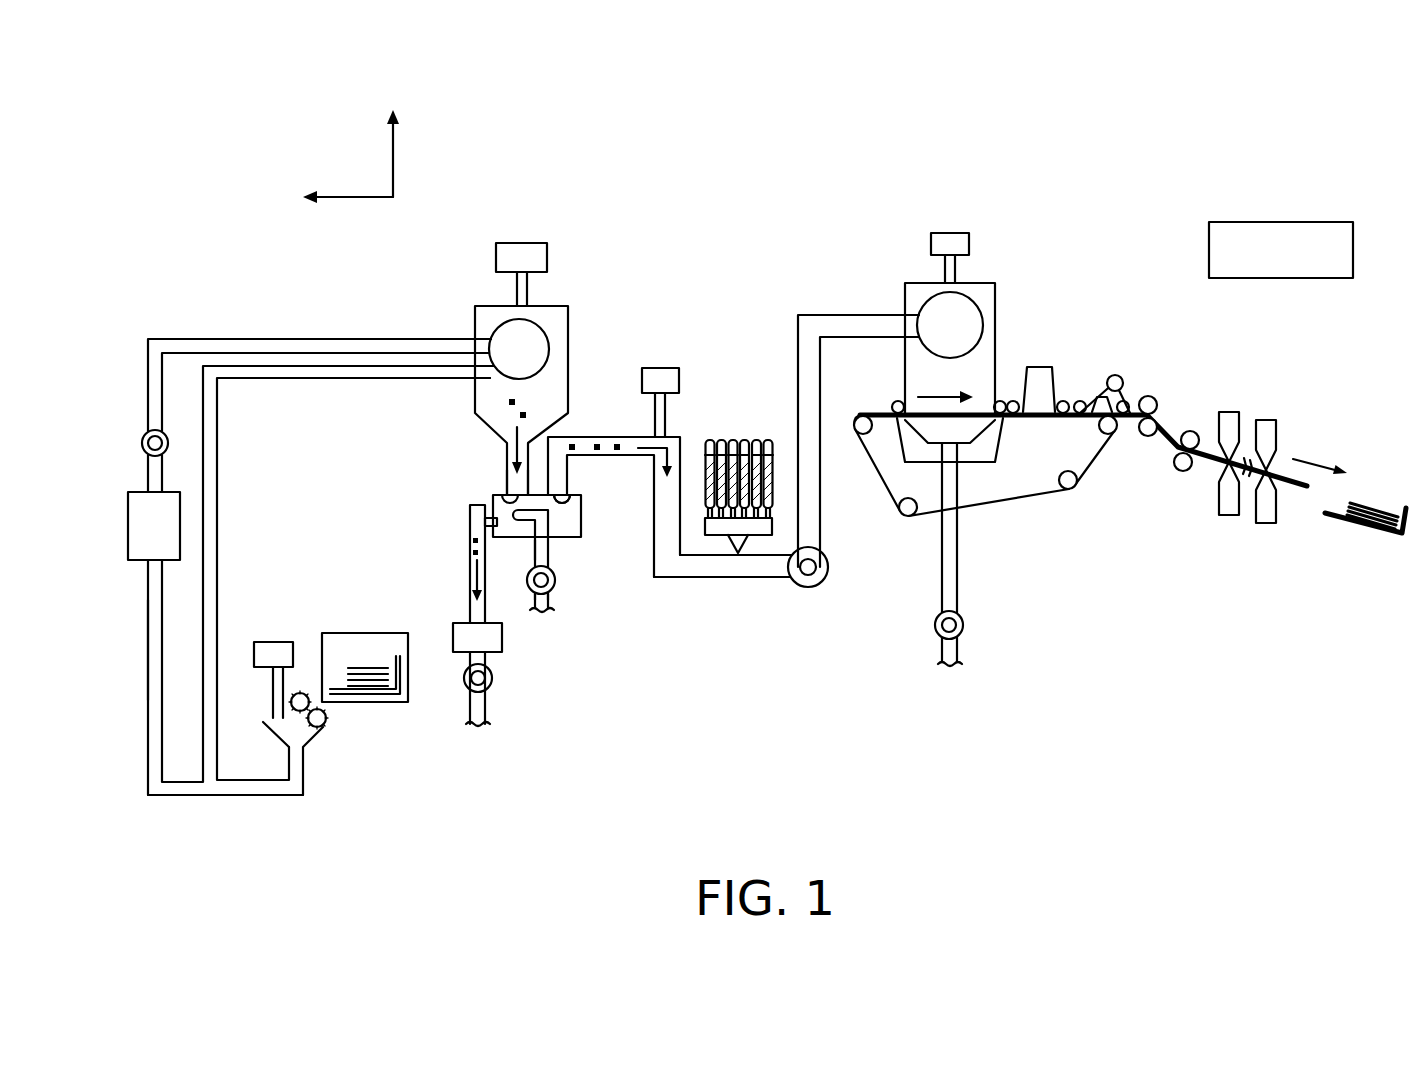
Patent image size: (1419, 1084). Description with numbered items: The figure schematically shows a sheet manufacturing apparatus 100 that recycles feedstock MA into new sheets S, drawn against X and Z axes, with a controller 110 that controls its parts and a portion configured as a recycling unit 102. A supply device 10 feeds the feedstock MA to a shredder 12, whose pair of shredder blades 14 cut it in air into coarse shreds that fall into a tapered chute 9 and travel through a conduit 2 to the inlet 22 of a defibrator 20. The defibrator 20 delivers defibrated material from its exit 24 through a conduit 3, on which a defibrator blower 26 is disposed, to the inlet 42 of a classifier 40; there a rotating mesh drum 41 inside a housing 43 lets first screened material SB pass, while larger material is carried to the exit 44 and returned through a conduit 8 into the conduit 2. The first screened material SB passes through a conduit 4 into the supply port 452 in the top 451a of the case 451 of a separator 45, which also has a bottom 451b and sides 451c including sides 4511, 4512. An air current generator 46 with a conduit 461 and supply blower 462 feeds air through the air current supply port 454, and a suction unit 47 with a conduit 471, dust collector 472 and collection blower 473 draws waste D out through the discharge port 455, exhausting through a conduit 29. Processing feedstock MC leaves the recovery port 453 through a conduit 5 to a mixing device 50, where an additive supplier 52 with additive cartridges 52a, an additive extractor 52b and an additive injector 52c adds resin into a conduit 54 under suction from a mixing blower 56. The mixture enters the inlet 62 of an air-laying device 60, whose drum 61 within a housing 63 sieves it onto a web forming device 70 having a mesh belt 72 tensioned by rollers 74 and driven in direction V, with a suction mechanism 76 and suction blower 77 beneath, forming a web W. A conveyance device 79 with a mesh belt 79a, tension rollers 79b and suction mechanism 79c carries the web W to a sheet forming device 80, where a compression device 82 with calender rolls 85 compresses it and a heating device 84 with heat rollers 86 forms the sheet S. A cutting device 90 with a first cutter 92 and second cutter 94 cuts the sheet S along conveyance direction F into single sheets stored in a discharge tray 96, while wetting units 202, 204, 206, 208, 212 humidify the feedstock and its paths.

The conduit 2 is at (218, 797).
The conduit 3 is at (225, 339).
The conduit 4 is at (505, 463).
The conduit 5 is at (574, 437).
The conduit 8 is at (310, 366).
The chute 9 is at (272, 742).
The supply device 10 is at (345, 633).
The shredder 12 is at (303, 680).
The shredder blades 14 is at (318, 730).
The defibrator 20 is at (183, 573).
The inlet 22 is at (152, 558).
The exit 24 is at (165, 497).
The defibrator blower 26 is at (150, 430).
The conduit 29 is at (470, 712).
The classifier 40 is at (592, 300).
The drum 41 is at (508, 322).
The inlet 42 is at (498, 340).
The housing 43 is at (548, 306).
The exit 44 is at (508, 372).
The separator 45 is at (425, 500).
The air current generator 46 is at (588, 652).
The suction unit 47 is at (566, 638).
The mixing device 50 is at (790, 612).
The additive supplier 52 is at (727, 371).
The additive cartridges 52a is at (768, 438).
The additive extractor 52b is at (705, 525).
The additive injector 52c is at (738, 556).
The conduit 54 is at (810, 315).
The mixing blower 56 is at (806, 588).
The air-laying device 60 is at (1017, 281).
The drum 61 is at (928, 300).
The inlet 62 is at (928, 345).
The housing 63 is at (982, 283).
The web forming device 70 is at (1093, 510).
The mesh belt 72 is at (884, 420).
The rollers 74 is at (1098, 428).
The suction mechanism 76 is at (1000, 445).
The suction blower 77 is at (935, 628).
The conveyance device 79 is at (1065, 303).
The mesh belt 79a is at (1087, 405).
The tension rollers 79b is at (1115, 375).
The suction mechanism 79c is at (1102, 396).
The sheet forming device 80 is at (1148, 333).
The compression device 82 is at (1159, 388).
The heating device 84 is at (1205, 425).
The calender rolls 85 is at (1158, 404).
The heat rollers 86 is at (1185, 470).
The cutting device 90 is at (1162, 570).
The first cutter 92 is at (1217, 526).
The second cutter 94 is at (1252, 545).
The discharge tray 96 is at (1406, 506).
The sheet manufacturing apparatus 100 is at (733, 220).
The recycling unit 102 is at (1160, 203).
The controller 110 is at (1305, 222).
The wetting unit 202 is at (270, 642).
The wetting unit 204 is at (518, 243).
The wetting unit 206 is at (657, 368).
The wetting unit 208 is at (931, 245).
The wetting unit 212 is at (1035, 380).
The case 451 is at (492, 500).
The top 451a is at (582, 496).
The bottom 451b is at (578, 540).
The sides 451c is at (380, 539).
The side 4511 is at (565, 517).
The side 4512 is at (470, 538).
The supply port 452 is at (505, 488).
The recovery port 453 is at (560, 496).
The air current supply port 454 is at (536, 548).
The discharge port 455 is at (486, 521).
The conduit 461 is at (556, 580).
The supply blower 462 is at (549, 606).
The conduit 471 is at (502, 636).
The dust collector 472 is at (493, 678).
The collection blower 473 is at (490, 714).
The waste D is at (470, 553).
The conveyance direction F is at (1320, 453).
The feedstock MA is at (378, 665).
The processing feedstock MC is at (615, 443).
The sheet S is at (1380, 503).
The first screened material SB is at (518, 415).
The direction of mesh belt travel V is at (945, 383).
The web W is at (975, 420).
The X axis X is at (338, 198).
The Z axis Z is at (392, 140).